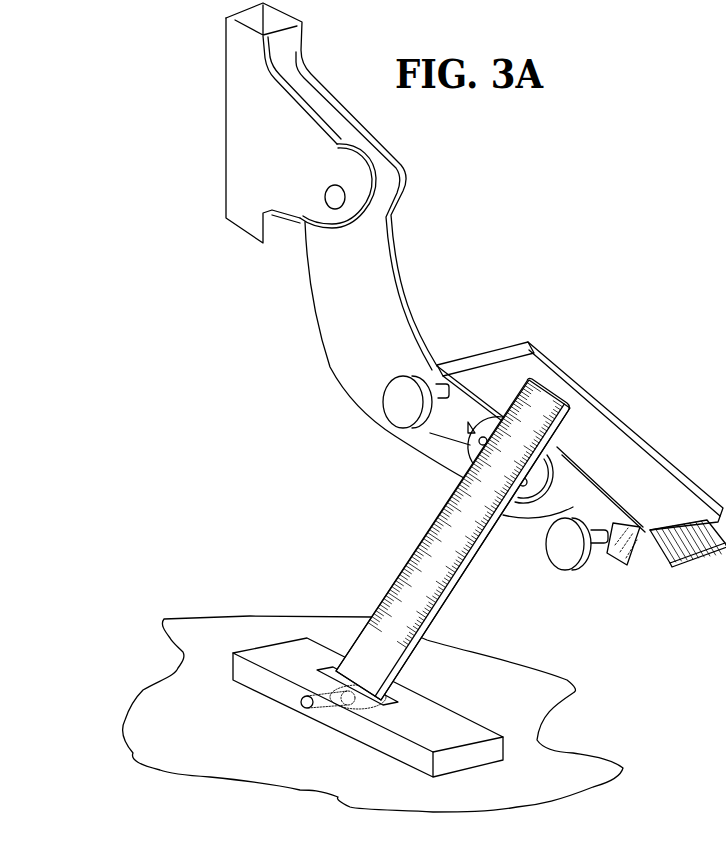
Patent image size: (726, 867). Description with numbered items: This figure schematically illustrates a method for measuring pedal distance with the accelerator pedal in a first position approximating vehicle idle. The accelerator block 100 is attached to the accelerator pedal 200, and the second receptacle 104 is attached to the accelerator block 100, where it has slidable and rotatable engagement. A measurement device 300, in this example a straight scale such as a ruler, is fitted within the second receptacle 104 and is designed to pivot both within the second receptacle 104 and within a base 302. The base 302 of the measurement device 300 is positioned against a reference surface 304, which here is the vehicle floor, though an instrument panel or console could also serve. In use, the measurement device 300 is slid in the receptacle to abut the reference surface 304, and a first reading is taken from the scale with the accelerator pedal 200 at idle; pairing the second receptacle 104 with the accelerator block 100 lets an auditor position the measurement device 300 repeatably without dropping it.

The accelerator block 100 is at (657, 487).
The second receptacle 104 is at (515, 492).
The accelerator pedal 200 is at (690, 558).
The measurement device 300 is at (433, 527).
The base 302 is at (272, 653).
The reference surface 304 is at (195, 690).